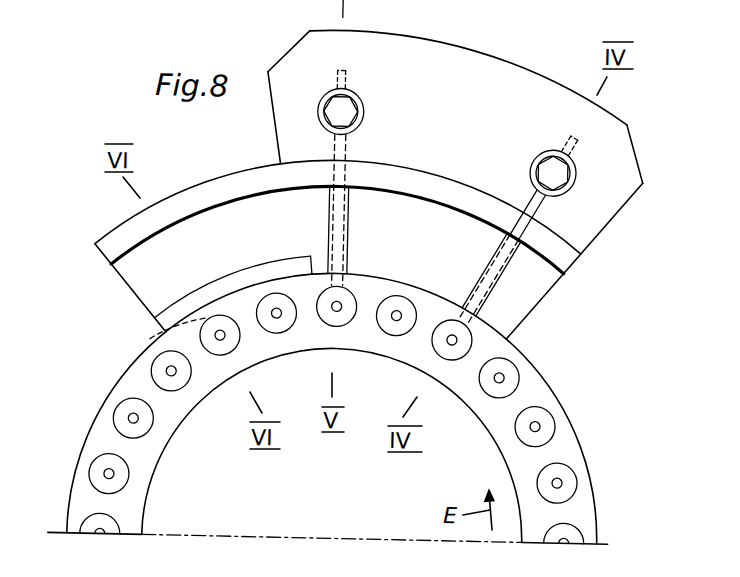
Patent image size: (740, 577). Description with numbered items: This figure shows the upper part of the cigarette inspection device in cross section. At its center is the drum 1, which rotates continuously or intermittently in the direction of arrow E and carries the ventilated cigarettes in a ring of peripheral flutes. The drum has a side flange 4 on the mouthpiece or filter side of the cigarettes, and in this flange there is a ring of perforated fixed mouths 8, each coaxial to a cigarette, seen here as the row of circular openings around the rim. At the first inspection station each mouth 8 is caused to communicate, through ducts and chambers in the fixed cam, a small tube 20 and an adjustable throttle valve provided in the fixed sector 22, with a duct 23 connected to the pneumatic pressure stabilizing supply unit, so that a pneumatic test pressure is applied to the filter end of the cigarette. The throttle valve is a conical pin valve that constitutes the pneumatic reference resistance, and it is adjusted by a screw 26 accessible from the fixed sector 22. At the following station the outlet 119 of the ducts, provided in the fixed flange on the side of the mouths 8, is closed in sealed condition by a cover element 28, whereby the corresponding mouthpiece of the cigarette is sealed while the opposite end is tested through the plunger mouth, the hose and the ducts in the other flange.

The drum 1 is at (218, 517).
The side flange 4 is at (544, 395).
The mouth 8 is at (226, 324).
The small tube 20 is at (321, 210).
The fixed sector 22 is at (507, 61).
The duct 23 is at (336, 72).
The screw 26 is at (336, 113).
The cover element 28 is at (180, 303).
The outlet 119 is at (149, 344).